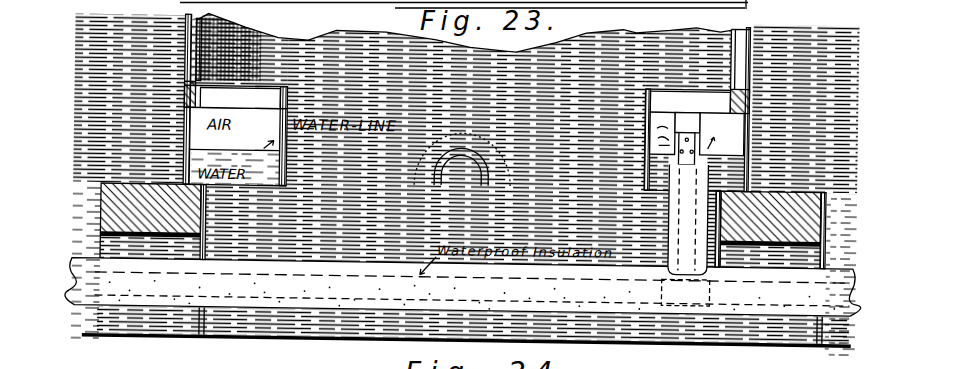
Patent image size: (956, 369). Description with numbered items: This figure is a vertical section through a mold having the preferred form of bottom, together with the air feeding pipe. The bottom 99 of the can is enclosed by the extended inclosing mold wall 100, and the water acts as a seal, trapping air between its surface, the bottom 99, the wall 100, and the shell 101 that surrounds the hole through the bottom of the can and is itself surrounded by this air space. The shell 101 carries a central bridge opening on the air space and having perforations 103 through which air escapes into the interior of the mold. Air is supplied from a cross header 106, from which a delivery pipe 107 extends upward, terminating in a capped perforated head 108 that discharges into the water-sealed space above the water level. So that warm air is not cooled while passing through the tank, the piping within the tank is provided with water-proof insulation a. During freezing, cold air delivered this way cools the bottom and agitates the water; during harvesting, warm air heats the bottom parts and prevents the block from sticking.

The bottom 99 is at (694, 82).
The extended inclosing mold wall 100 is at (745, 120).
The shell 101 is at (639, 120).
The perforations 103 is at (478, 144).
The cross header 106 is at (735, 290).
The delivery pipe 107 is at (746, 179).
The capped perforated head 108 is at (697, 141).
The water-proof insulation a is at (664, 233).